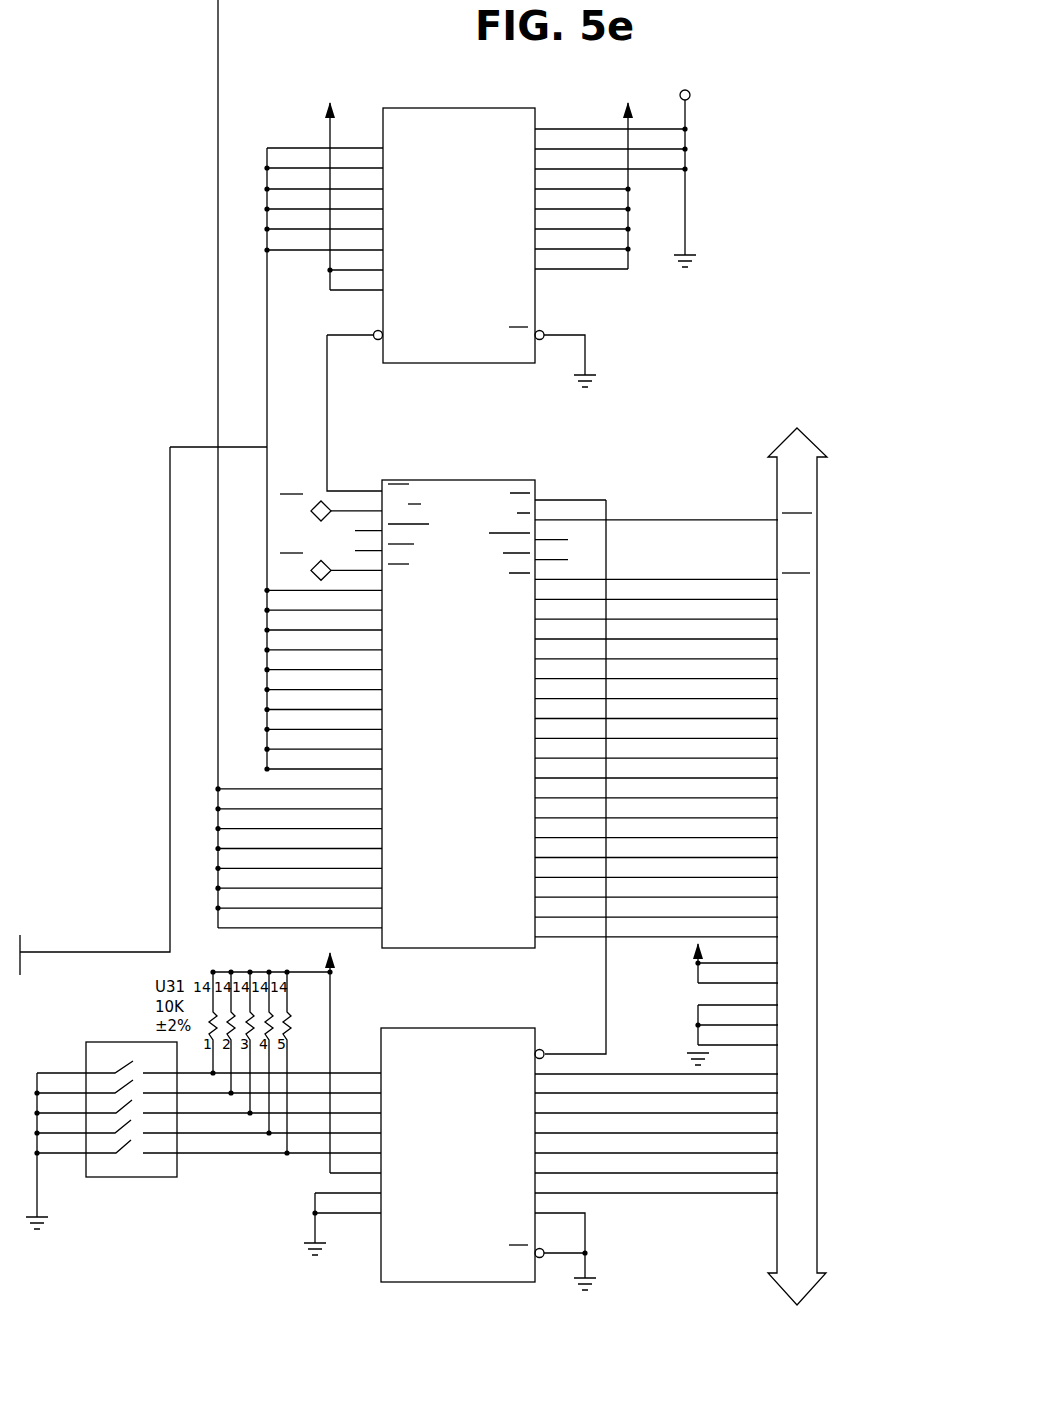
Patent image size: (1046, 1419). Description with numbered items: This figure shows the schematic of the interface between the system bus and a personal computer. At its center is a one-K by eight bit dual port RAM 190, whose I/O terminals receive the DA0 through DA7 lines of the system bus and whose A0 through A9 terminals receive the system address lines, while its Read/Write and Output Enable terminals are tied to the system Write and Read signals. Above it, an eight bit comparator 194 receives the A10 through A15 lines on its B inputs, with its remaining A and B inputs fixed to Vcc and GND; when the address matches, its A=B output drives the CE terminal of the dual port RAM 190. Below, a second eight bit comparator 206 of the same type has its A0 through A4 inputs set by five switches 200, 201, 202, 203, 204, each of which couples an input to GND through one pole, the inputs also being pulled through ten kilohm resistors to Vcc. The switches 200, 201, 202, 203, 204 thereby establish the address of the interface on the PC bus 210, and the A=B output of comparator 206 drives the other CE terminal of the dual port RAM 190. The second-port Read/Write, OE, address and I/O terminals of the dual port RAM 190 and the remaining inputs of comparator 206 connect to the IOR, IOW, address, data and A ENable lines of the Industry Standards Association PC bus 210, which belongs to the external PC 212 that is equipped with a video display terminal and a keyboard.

The dual port RAM 190 is at (516, 480).
The eight bit comparator 194 is at (506, 108).
The switch 200 is at (133, 1060).
The switch 201 is at (118, 1089).
The switch 202 is at (80, 1093).
The switch 203 is at (116, 1114).
The switch 204 is at (115, 1134).
The eight bit comparator 206 is at (388, 1028).
The PC bus 210 is at (778, 480).
The PC 212 is at (836, 356).